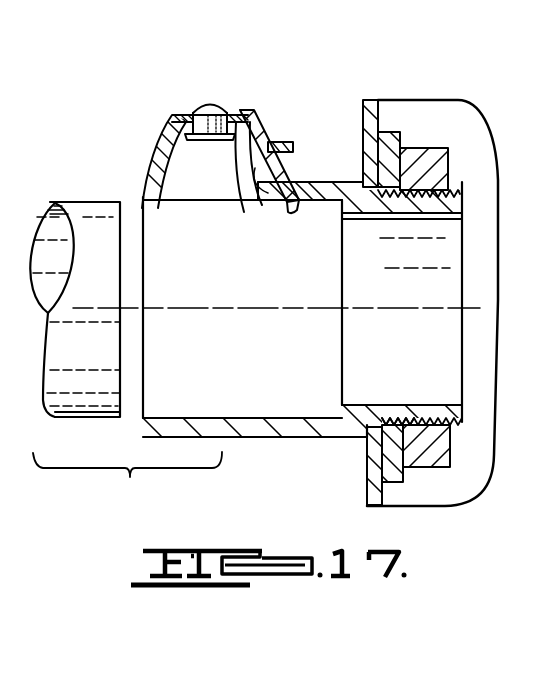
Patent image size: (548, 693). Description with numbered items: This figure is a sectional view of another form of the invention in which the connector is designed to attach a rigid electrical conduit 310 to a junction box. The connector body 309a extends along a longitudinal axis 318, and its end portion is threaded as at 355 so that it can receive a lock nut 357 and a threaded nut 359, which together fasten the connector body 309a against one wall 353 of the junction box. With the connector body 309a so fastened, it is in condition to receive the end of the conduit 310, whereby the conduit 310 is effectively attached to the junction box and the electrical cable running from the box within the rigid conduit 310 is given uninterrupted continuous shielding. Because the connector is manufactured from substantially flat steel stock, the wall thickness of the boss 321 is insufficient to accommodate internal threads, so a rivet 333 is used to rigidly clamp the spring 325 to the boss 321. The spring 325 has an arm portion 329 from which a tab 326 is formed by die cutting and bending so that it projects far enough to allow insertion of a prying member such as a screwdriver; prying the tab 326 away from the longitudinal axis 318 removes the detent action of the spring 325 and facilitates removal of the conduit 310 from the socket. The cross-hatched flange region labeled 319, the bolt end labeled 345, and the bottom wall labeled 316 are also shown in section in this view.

The conduit 310 is at (87, 203).
The boss 321 is at (147, 158).
The rivet 333 is at (203, 104).
The spring 325 is at (262, 110).
The tab 326 is at (283, 143).
The flange 319 is at (295, 180).
The wall of the junction box 353 is at (368, 100).
The lock nut 357 is at (393, 133).
The arm portion 329 is at (250, 197).
The bolt end 345 is at (290, 210).
The longitudinal axis 318 is at (173, 312).
The bottom wall 316 is at (237, 417).
The connector body 309a is at (263, 440).
The threads 355 is at (418, 407).
The threaded nut 359 is at (426, 460).